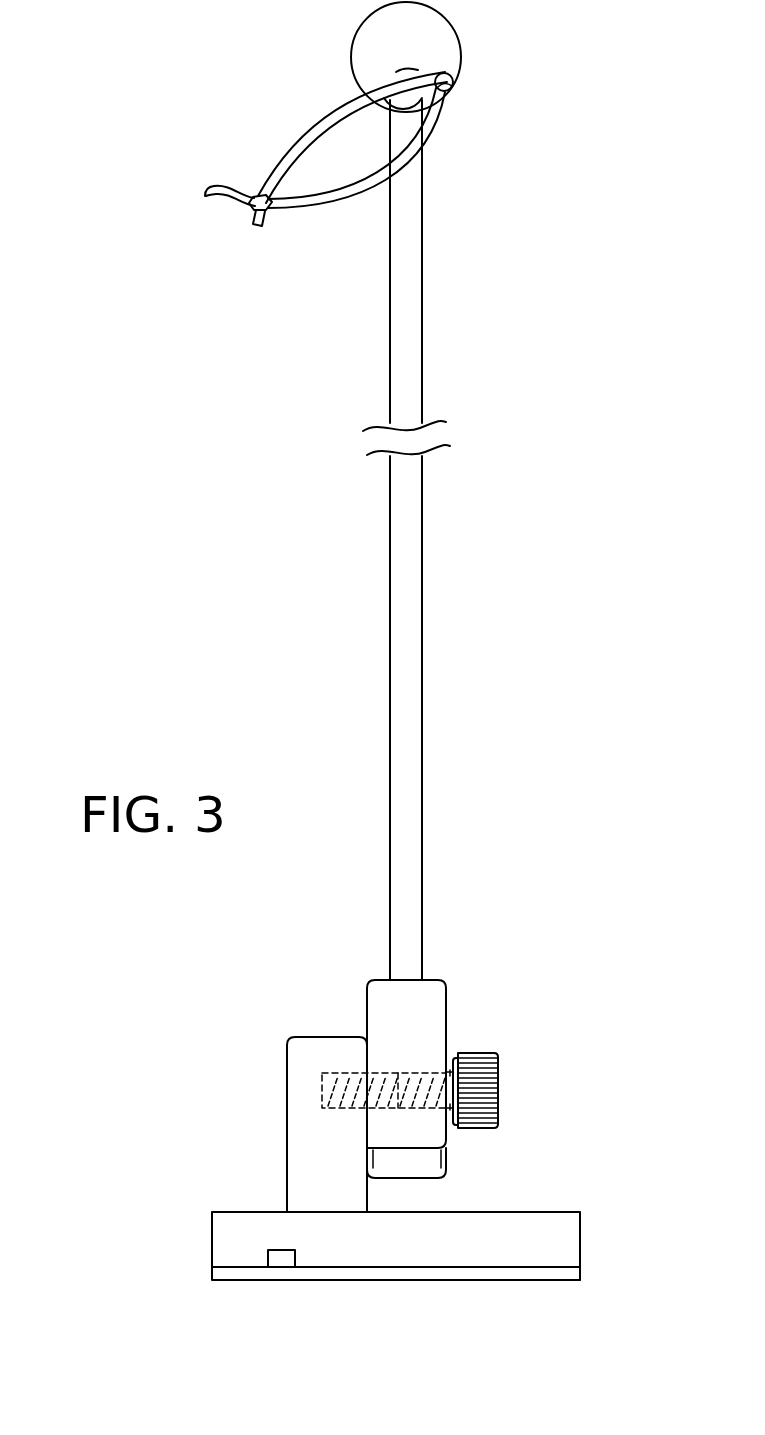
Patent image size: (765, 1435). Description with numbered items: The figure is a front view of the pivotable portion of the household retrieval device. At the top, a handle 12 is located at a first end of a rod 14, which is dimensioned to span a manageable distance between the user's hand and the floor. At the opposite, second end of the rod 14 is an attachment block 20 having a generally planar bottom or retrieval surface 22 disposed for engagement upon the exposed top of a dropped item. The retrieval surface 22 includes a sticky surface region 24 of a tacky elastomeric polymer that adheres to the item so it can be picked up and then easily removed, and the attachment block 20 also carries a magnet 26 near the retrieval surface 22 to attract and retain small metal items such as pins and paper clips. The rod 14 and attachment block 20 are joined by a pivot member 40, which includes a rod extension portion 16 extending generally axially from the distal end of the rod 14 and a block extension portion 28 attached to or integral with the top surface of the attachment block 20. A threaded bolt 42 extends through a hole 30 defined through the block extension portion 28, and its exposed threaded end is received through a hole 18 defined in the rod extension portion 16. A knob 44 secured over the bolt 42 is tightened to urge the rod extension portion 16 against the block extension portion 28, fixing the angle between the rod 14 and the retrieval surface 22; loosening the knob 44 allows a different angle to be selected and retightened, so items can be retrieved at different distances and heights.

The handle 12 is at (463, 62).
The rod 14 is at (390, 340).
The rod extension portion 16 is at (367, 1000).
The hole 18 is at (398, 1073).
The attachment block 20 is at (573, 1233).
The retrieval surface 22 is at (362, 1282).
The sticky surface region 24 is at (550, 1280).
The magnet 26 is at (278, 1260).
The block extension portion 28 is at (287, 1162).
The hole 30 is at (337, 1072).
The pivot member 40 is at (464, 1145).
The threaded bolt 42 is at (395, 1112).
The knob 44 is at (497, 1097).